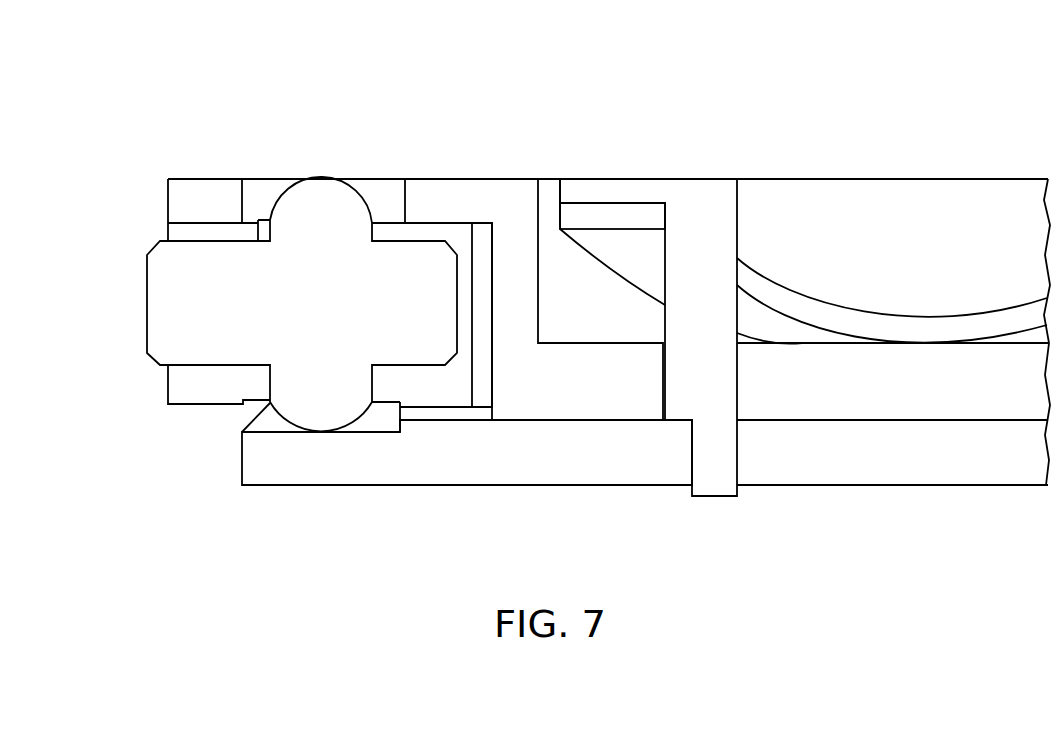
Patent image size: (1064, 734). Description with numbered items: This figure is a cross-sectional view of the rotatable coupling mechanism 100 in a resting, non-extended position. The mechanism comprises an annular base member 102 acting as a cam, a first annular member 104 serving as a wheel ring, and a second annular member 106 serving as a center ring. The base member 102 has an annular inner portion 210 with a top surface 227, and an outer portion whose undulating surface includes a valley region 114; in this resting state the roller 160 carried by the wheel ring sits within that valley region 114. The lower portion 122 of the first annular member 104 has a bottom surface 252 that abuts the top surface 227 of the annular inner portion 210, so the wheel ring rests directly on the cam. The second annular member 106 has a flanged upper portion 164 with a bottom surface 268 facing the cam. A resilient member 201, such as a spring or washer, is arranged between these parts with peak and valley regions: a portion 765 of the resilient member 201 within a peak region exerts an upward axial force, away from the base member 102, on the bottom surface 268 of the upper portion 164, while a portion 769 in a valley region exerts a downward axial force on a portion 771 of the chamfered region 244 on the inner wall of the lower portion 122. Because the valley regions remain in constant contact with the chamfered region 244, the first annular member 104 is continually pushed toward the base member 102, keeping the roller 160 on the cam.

The rotatable coupling mechanism 100 is at (943, 68).
The annular base member 102 is at (242, 470).
The first annular member 104 is at (486, 178).
The second annular member 106 is at (732, 180).
The valley region 114 is at (199, 423).
The lower portion 122 is at (487, 385).
The roller 160 is at (170, 315).
The upper portion 164 is at (656, 180).
The resilient member 201 is at (840, 338).
The annular inner portion 210 is at (414, 393).
The top surface 227 is at (734, 397).
The chamfered region 244 is at (614, 357).
The bottom surface 252 is at (577, 476).
The bottom surface 268 is at (609, 184).
The portion of the resilient member 765 is at (622, 268).
The portion of the resilient member 769 is at (969, 286).
The portion of the chamfered region 771 is at (870, 366).